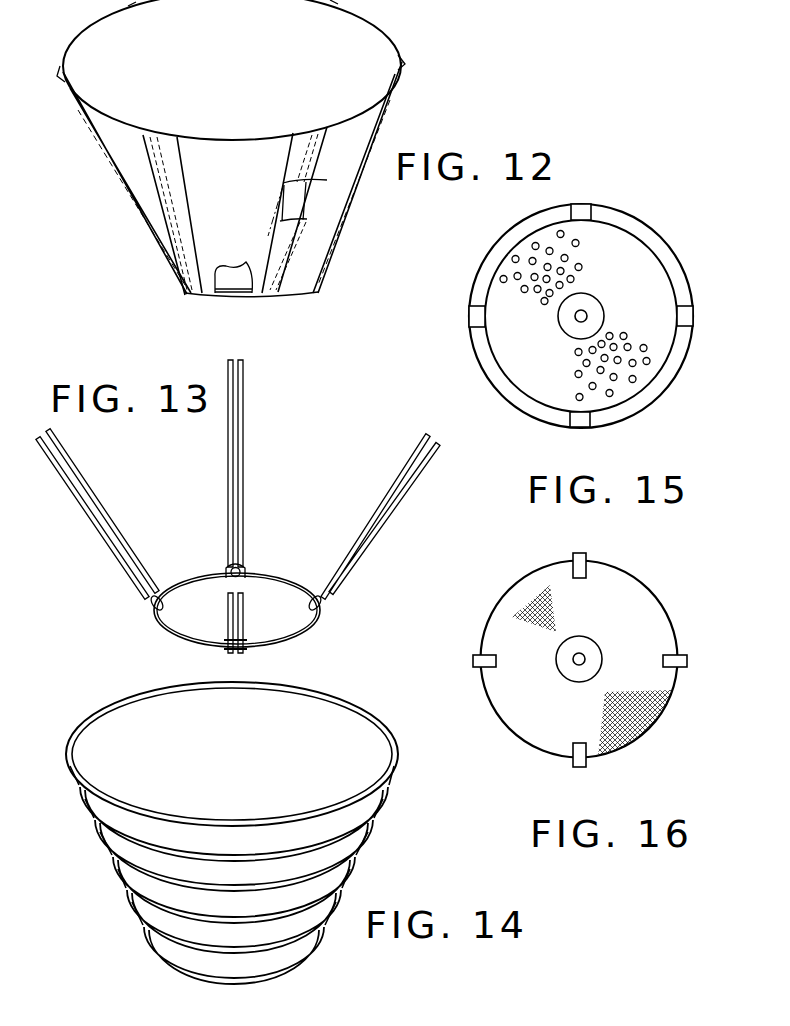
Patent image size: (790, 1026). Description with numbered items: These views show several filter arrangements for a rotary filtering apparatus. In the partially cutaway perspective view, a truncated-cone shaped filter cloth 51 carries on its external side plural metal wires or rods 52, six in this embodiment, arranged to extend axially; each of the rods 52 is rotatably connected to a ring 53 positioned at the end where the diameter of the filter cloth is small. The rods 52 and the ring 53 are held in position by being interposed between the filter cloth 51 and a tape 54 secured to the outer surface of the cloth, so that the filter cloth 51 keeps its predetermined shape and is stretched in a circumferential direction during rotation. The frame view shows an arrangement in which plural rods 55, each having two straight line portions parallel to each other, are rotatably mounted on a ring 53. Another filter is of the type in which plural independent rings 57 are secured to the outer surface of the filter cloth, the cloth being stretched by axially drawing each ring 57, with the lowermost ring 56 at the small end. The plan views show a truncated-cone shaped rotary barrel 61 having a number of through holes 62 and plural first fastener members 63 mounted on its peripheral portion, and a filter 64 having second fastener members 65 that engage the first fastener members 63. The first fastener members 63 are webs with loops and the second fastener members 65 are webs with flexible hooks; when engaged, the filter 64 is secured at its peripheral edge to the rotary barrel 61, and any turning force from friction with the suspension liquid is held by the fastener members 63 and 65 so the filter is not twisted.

In FIG. 12, the filter cloth 51 is at (383, 52).
In FIG. 12, the metal wires or rods 52 is at (290, 222).
In FIG. 12, the ring 53 is at (218, 294).
In FIG. 13, the ring 53 is at (302, 636).
In FIG. 12, the tape 54 is at (292, 282).
In FIG. 13, the rods 55 is at (361, 537).
In FIG. 14, the bottom ring 56 is at (311, 955).
In FIG. 14, the independent rings 57 is at (378, 712).
In FIG. 15, the rotary barrel 61 is at (649, 262).
In FIG. 15, the through holes 62 is at (514, 260).
In FIG. 15, the first fastener members 63 is at (586, 213).
In FIG. 16, the filter 64 is at (511, 708).
In FIG. 16, the second fastener members 65 is at (586, 562).